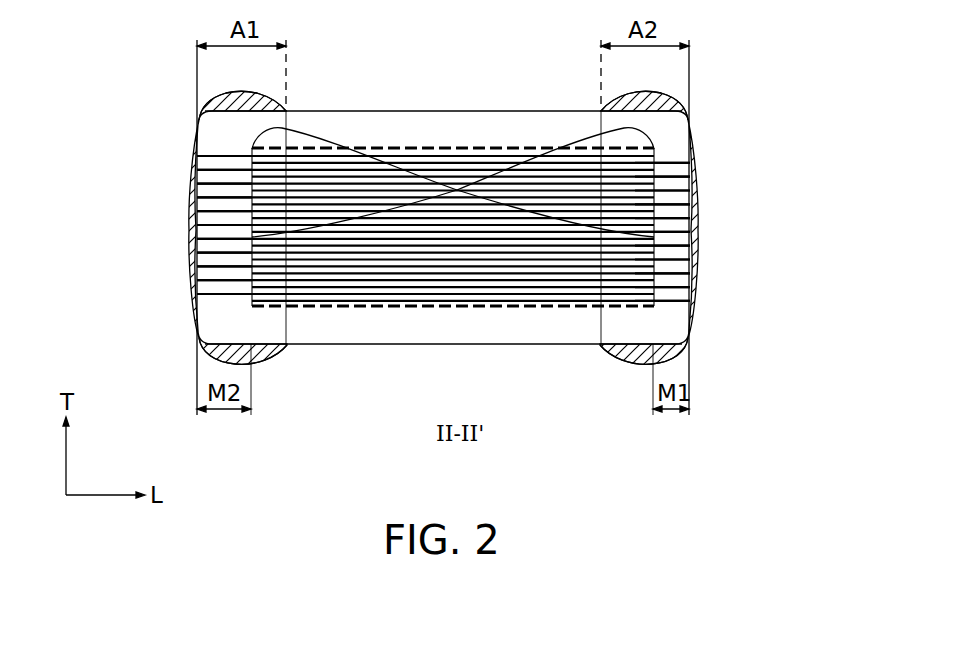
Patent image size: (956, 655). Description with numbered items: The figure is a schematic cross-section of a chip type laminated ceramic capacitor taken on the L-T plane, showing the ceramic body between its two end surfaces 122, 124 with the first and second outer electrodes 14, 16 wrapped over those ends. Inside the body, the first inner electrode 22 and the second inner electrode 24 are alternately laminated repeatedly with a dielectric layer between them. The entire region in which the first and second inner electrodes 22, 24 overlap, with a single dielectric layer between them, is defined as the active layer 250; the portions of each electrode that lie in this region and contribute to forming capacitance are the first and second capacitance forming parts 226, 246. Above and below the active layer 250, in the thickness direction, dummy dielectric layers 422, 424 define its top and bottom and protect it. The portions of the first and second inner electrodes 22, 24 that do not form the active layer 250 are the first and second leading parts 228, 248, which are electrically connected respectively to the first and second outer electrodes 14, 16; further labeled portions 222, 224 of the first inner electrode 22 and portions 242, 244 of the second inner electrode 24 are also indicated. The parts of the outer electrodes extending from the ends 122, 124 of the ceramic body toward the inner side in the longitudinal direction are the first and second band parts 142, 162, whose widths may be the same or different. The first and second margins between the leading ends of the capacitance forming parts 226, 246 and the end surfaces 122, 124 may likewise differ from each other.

The first outer electrode 14 is at (186, 247).
The second outer electrode 16 is at (703, 247).
The first band part 142 is at (243, 92).
The end of ceramic body 122 is at (198, 311).
The second band part 162 is at (644, 92).
The end of ceramic body 124 is at (692, 311).
The first inner electrode 22 is at (347, 289).
The portion of first inner electrode 222 is at (200, 236).
The portion of first inner electrode 224 is at (197, 162).
The first capacitance forming part 226 is at (410, 250).
The first leading part 228 is at (224, 252).
The second inner electrode 24 is at (552, 225).
The portion of second inner electrode 242 is at (690, 162).
The portion of second inner electrode 244 is at (688, 236).
The second capacitance forming part 246 is at (443, 232).
The second leading part 248 is at (666, 252).
The active layer 250 is at (426, 140).
The dummy dielectric layer 422 is at (522, 128).
The dummy dielectric layer 424 is at (547, 330).